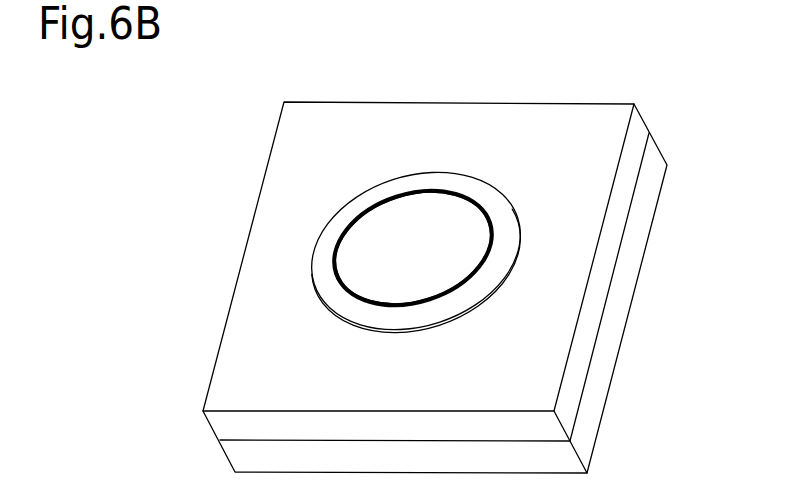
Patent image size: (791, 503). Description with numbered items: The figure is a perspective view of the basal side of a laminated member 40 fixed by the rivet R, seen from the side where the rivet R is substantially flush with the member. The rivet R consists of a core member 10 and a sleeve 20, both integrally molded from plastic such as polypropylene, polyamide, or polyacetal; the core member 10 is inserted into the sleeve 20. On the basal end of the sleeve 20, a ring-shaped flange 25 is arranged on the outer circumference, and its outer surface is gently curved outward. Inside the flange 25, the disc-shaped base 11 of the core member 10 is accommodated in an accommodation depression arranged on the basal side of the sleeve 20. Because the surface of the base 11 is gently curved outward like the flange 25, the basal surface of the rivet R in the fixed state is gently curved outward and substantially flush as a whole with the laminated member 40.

The base block 40 is at (667, 152).
The sleeve 20 is at (488, 295).
The flange 25 is at (515, 213).
The core member 10 is at (397, 214).
The base 11 is at (404, 290).
The rivet R is at (510, 180).